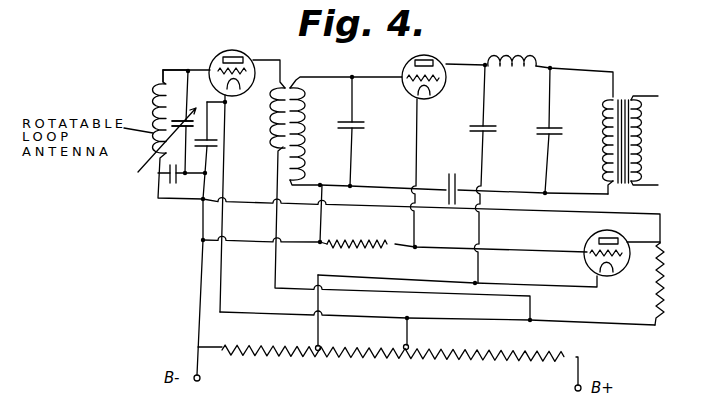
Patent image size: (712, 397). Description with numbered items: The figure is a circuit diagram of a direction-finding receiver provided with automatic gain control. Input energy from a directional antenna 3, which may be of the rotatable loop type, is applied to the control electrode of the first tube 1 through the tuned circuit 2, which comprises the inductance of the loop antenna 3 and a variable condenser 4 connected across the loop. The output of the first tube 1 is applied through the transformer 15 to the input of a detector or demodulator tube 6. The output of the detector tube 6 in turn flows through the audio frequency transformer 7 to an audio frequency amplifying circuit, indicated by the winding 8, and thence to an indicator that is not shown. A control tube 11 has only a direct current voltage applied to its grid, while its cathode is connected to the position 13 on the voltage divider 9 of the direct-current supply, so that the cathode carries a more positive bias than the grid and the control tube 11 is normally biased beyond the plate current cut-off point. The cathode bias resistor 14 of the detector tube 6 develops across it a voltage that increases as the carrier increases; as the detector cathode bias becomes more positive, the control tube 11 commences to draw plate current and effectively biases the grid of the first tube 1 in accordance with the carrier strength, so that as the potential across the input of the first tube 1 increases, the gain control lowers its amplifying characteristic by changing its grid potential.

The first tube 1 is at (250, 42).
The tuned circuit 2 is at (168, 68).
The directional antenna 3 is at (155, 100).
The variable condenser 4 is at (160, 147).
The detector or demodulator tube 6 is at (438, 64).
The audio frequency transformer 7 is at (628, 97).
The winding 8 is at (656, 96).
The voltage divider 9 is at (250, 356).
The control tube 11 is at (622, 267).
The position on voltage divider 13 is at (316, 352).
The cathode bias resistor 14 is at (350, 246).
The transformer 15 is at (287, 91).